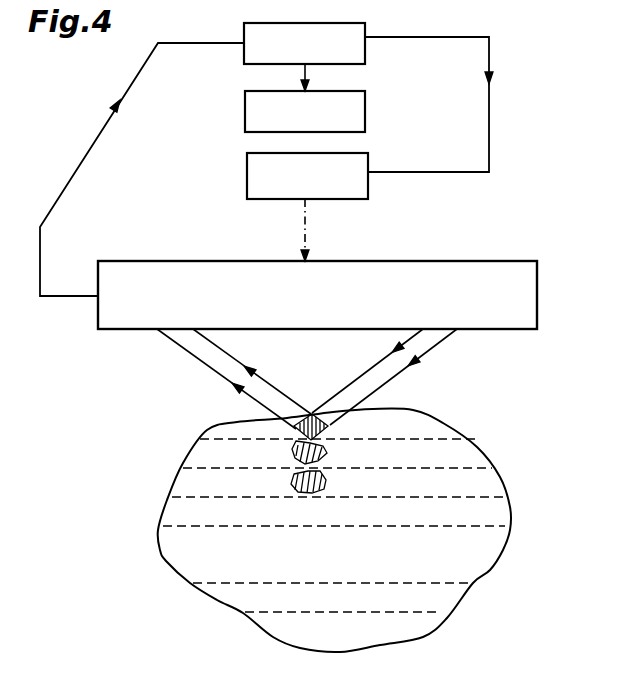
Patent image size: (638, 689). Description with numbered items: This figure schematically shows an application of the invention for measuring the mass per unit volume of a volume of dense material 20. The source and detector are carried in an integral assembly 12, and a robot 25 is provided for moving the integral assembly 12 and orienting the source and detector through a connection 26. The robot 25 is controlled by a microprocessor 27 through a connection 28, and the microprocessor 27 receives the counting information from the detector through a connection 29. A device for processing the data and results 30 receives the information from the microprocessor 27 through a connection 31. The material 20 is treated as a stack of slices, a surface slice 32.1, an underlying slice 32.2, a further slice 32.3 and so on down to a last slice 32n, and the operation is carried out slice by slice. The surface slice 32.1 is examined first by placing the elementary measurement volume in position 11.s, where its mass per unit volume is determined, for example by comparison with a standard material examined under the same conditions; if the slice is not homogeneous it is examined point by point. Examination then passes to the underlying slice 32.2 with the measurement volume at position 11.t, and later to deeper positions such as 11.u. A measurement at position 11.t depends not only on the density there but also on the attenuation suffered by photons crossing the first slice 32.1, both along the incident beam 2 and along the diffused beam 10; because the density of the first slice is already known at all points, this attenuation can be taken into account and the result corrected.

The incident beam 2 is at (373, 372).
The diffused beam 10 is at (232, 366).
The elementary measurement volume position in surface slice 11.s is at (316, 408).
The elementary measurement volume position in underlying slice 11.t is at (323, 440).
The elementary measurement volume position in deeper slice 11.u is at (320, 478).
The integral assembly 12 is at (430, 278).
The dense material 20 is at (480, 560).
The robot 25 is at (355, 162).
The connection 26 is at (306, 205).
The microprocessor 27 is at (365, 48).
The connection 28 is at (489, 118).
The connection 29 is at (133, 85).
The device for processing the data and results 30 is at (365, 112).
The connection 31 is at (303, 72).
The surface slice 32.1 is at (435, 430).
The underlying slice 32.2 is at (450, 455).
The third slice 32.3 is at (478, 488).
The n-th slice 32n is at (398, 635).